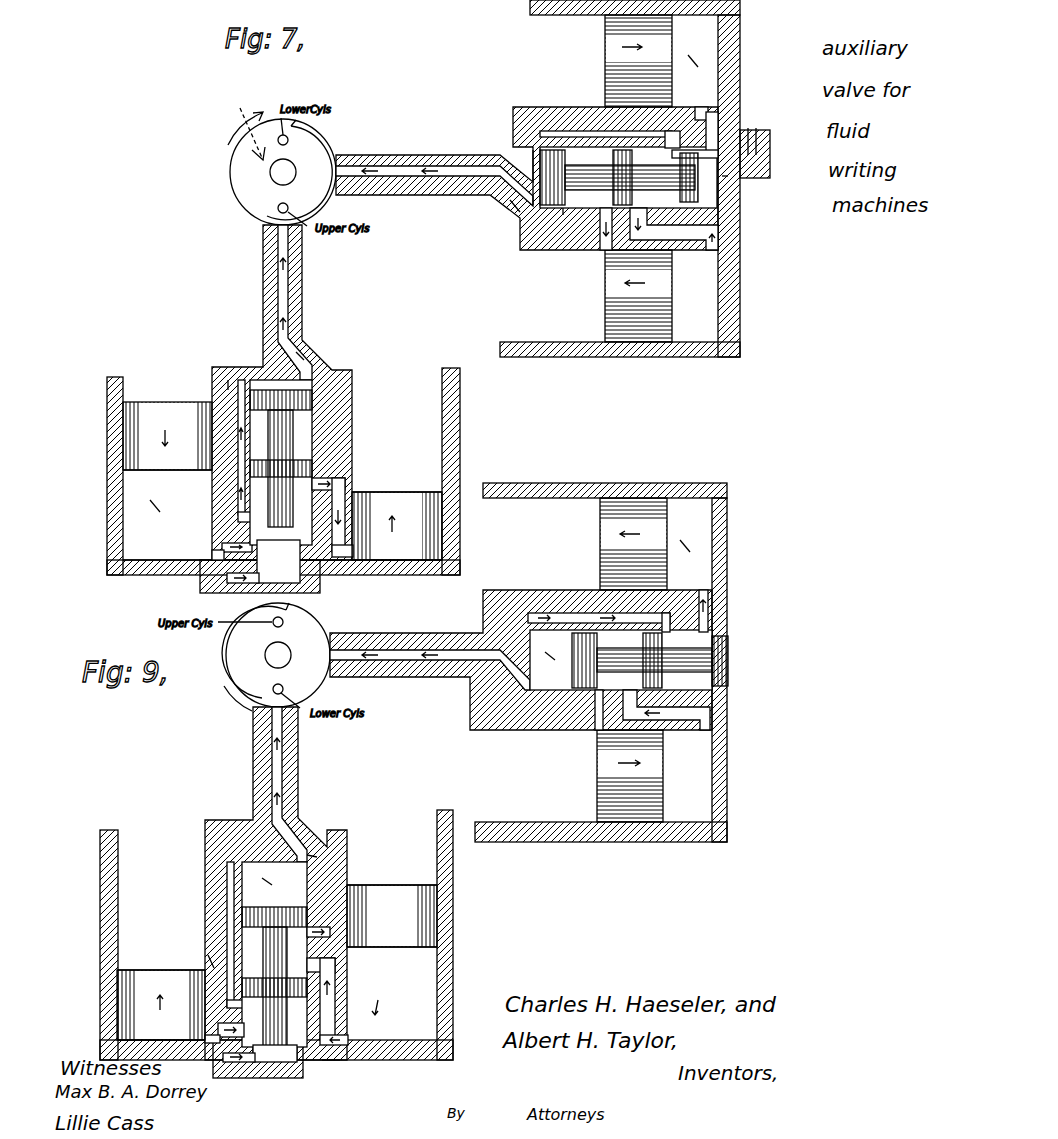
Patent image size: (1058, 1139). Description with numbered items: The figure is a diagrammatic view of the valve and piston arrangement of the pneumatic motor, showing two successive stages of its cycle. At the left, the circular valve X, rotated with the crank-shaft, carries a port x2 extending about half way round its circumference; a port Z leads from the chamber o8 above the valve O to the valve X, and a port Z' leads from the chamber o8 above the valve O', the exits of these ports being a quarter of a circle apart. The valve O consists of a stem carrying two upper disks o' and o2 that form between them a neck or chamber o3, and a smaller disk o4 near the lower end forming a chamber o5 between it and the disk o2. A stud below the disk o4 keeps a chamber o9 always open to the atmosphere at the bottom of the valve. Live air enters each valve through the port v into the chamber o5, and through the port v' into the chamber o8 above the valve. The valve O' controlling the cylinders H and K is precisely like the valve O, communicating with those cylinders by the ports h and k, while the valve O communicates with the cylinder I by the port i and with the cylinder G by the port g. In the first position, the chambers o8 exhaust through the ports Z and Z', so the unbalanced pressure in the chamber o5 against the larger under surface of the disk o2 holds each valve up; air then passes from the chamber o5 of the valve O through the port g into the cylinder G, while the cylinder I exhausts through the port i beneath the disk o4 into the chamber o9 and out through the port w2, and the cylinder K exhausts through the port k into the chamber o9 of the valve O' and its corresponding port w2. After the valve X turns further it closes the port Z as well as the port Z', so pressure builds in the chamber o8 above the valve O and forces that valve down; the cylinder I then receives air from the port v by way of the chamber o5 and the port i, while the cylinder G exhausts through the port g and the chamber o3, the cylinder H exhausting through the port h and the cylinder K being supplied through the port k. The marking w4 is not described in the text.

In FIG. 7, the circular valve X is at (233, 162).
In FIG. 9, the circular valve X is at (313, 635).
In FIG. 7, the port x2 is at (322, 145).
In FIG. 9, the port x2 is at (228, 653).
In FIG. 7, the port Z' is at (434, 164).
In FIG. 9, the port Z' is at (430, 678).
In FIG. 7, the port Z is at (305, 302).
In FIG. 9, the port Z is at (300, 784).
In FIG. 7, the chamber o8 is at (533, 157).
In FIG. 9, the chamber o8 is at (317, 857).
In FIG. 7, the port v is at (439, 306).
In FIG. 9, the port v is at (197, 948).
In FIG. 7, the valve O' is at (628, 135).
In FIG. 9, the valve O' is at (653, 660).
In FIG. 7, the port k is at (715, 118).
In FIG. 9, the port k is at (703, 611).
In FIG. 7, the cylinder K is at (712, 66).
In FIG. 9, the cylinder K is at (700, 558).
In FIG. 7, the port w2 is at (745, 147).
In FIG. 9, the port w2 is at (224, 1033).
In FIG. 7, the chamber o9 is at (740, 176).
In FIG. 9, the chamber o9 is at (275, 1053).
In FIG. 7, the disk o4 is at (703, 192).
In FIG. 9, the disk o4 is at (730, 673).
In FIG. 7, the port h is at (720, 233).
In FIG. 7, the cylinder H is at (713, 293).
In FIG. 9, the cylinder H is at (703, 783).
In FIG. 7, the neck or chamber o5 is at (657, 210).
In FIG. 7, the disk o2 is at (580, 210).
In FIG. 9, the disk o2 is at (670, 682).
In FIG. 7, the neck or chamber o3 is at (563, 210).
In FIG. 9, the neck or chamber o3 is at (335, 970).
In FIG. 7, the port v' is at (215, 360).
In FIG. 9, the port v' is at (448, 807).
In FIG. 7, the valve O is at (273, 437).
In FIG. 9, the valve O is at (283, 978).
In FIG. 7, the cylinder G is at (430, 563).
In FIG. 9, the cylinder G is at (423, 1032).
In FIG. 7, the cylinder I is at (162, 557).
In FIG. 9, the cylinder I is at (100, 958).
In FIG. 7, the port i is at (222, 562).
In FIG. 9, the port i is at (229, 1065).
In FIG. 7, the port g is at (337, 563).
In FIG. 9, the port g is at (330, 1065).
In FIG. 9, the port w4 is at (347, 887).
In FIG. 7, the disk o' is at (490, 214).
In FIG. 9, the disk o' is at (429, 885).